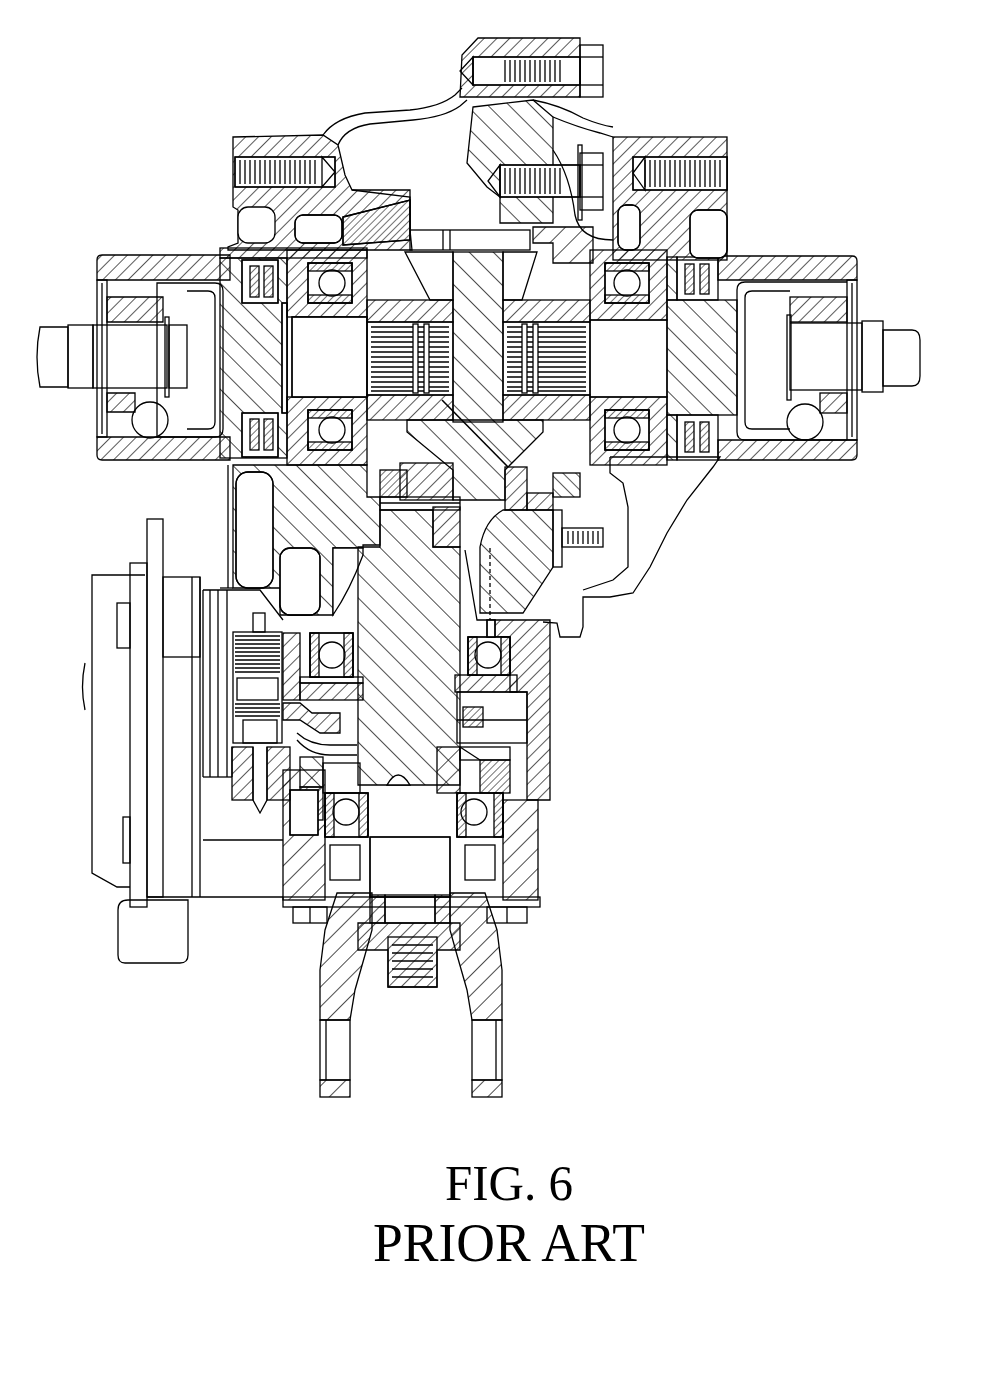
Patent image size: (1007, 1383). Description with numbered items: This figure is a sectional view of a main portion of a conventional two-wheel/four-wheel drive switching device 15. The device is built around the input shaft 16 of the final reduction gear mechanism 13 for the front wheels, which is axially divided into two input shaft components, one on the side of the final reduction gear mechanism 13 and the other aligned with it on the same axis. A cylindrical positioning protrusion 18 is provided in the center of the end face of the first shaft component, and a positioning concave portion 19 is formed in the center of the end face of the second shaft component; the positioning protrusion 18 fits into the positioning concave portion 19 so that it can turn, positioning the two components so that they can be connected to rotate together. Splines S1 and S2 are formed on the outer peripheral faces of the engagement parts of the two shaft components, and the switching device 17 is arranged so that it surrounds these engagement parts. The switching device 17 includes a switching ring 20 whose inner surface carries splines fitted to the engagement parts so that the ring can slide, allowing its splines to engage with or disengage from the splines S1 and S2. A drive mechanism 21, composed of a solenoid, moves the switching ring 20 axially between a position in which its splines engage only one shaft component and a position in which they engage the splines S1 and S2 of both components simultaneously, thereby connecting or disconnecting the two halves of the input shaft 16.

The final reduction gear mechanism 13 is at (652, 540).
The two-wheel/four-wheel drive switching device 15 is at (540, 850).
The input shaft 16 is at (528, 652).
The switching device 17 is at (500, 724).
The positioning protrusion 18 is at (525, 790).
The positioning concave portion 19 is at (405, 805).
The switching ring 20 is at (470, 735).
The drive mechanism 21 is at (258, 693).
The spline S1 is at (460, 745).
The spline S2 is at (355, 760).